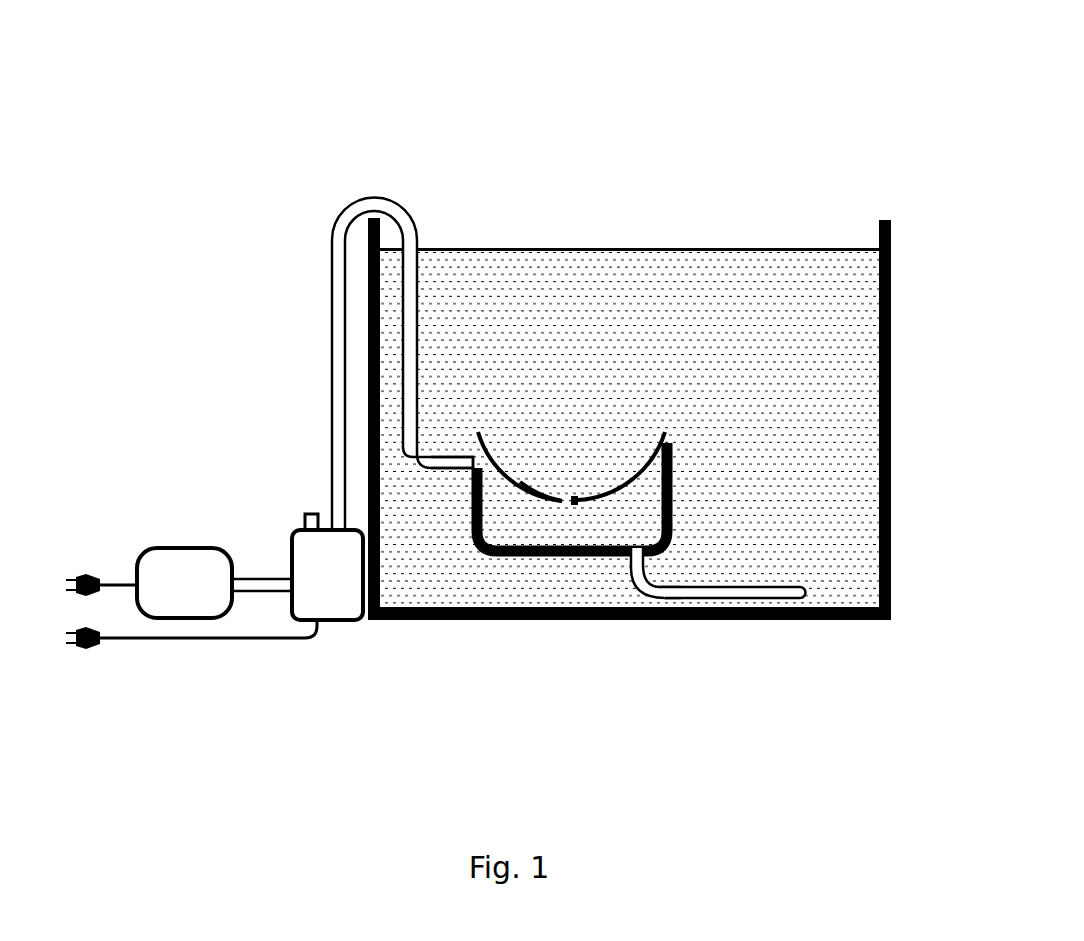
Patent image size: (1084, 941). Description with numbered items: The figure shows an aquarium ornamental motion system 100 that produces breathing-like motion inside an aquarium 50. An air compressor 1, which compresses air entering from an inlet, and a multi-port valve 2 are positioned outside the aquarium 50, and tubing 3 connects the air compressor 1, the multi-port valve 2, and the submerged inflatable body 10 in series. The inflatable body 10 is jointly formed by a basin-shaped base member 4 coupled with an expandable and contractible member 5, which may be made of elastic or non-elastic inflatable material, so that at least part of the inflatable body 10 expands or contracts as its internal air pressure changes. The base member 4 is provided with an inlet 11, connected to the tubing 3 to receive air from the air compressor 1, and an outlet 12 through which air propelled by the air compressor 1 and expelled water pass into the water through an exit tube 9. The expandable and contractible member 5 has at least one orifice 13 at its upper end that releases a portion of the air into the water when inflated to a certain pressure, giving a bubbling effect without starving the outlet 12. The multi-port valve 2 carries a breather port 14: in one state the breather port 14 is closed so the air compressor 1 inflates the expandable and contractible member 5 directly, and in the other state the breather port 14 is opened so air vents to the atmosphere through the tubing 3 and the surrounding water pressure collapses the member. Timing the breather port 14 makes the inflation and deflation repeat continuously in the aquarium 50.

The aquarium ornamental motion system 100 is at (772, 102).
The aquarium 50 is at (878, 240).
The air compressor 1 is at (190, 560).
The multi-port valve 2 is at (330, 560).
The tubing 3 is at (332, 237).
The base member 4 is at (498, 558).
The expandable and contractible member 5 is at (540, 503).
The exit tube 9 is at (772, 592).
The inflatable body 10 is at (665, 402).
The inlet 11 is at (475, 462).
The outlet 12 is at (638, 552).
The orifice 13 is at (574, 506).
The breather port 14 is at (305, 518).